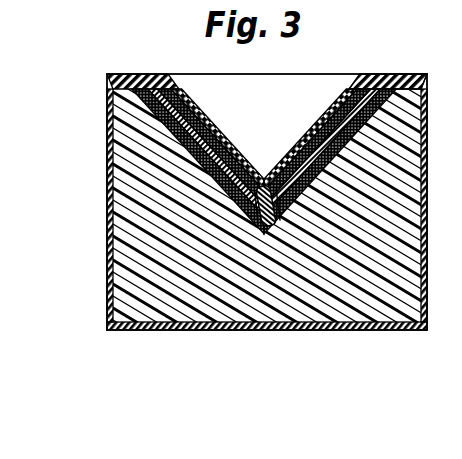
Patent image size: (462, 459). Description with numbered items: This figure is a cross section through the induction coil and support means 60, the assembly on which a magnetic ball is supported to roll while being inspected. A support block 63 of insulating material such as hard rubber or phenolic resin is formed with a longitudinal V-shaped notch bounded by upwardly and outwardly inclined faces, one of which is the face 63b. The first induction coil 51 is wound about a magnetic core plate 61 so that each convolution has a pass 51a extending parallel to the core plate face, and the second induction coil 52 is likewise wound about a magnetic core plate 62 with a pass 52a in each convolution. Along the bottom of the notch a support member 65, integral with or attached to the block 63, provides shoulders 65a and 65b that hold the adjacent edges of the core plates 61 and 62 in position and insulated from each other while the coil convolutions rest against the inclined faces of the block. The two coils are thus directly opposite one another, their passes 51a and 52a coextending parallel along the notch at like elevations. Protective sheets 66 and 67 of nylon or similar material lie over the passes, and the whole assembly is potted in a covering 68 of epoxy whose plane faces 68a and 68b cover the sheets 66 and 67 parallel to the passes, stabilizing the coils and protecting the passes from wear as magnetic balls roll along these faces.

The induction coil and support means 60 is at (367, 336).
The magnetic core plate 61 is at (427, 91).
The magnetic core plate 62 is at (152, 105).
The support block 63 is at (239, 330).
The upwardly and outwardly inclined face 63b is at (143, 100).
The support member 65 is at (268, 227).
The shoulder 65a is at (287, 215).
The shoulder 65b is at (252, 208).
The protective sheet 66 is at (362, 90).
The protective sheet 67 is at (188, 118).
The covering 68 is at (399, 66).
The plane face 68a is at (338, 106).
The plane face 68b is at (232, 153).
The first induction coil 51 is at (350, 96).
The pass 51a is at (312, 137).
The second induction coil 52 is at (205, 128).
The pass 52a is at (205, 112).